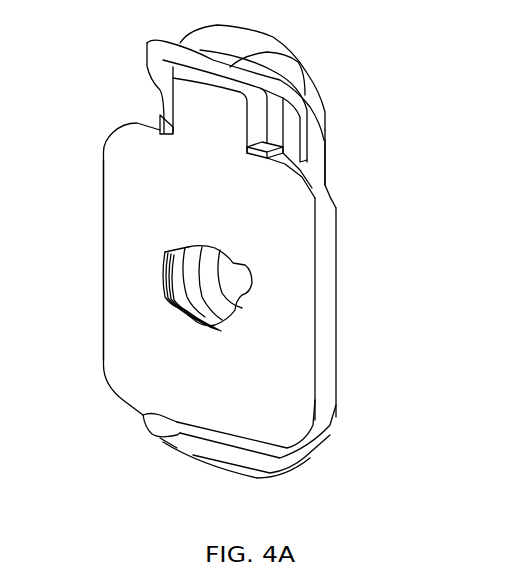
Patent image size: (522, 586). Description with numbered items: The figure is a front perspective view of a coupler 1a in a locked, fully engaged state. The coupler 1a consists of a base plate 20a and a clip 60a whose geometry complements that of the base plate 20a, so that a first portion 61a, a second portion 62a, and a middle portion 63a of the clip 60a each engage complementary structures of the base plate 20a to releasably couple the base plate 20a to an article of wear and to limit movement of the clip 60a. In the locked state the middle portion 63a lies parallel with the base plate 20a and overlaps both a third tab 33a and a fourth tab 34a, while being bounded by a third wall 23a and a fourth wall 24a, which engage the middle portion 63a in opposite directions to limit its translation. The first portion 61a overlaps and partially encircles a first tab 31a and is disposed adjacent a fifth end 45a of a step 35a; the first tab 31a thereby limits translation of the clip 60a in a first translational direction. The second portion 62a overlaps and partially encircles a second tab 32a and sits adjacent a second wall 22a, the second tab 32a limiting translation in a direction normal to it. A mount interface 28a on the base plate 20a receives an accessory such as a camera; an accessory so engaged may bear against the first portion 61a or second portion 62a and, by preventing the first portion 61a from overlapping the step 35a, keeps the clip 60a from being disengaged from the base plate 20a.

The coupler 1a is at (462, 88).
The base plate 20a is at (104, 148).
The second wall 22a is at (163, 427).
The third wall 23a is at (82, 280).
The fourth wall 24a is at (395, 389).
The mount interface 28a is at (250, 305).
The first tab 31a is at (230, 70).
The second tab 32a is at (297, 462).
The third tab 33a is at (104, 232).
The fourth tab 34a is at (336, 288).
The step 35a is at (162, 118).
The fifth end 45a is at (293, 53).
The clip 60a is at (148, 48).
The first portion 61a is at (320, 84).
The second portion 62a is at (163, 457).
The middle portion 63a is at (344, 156).